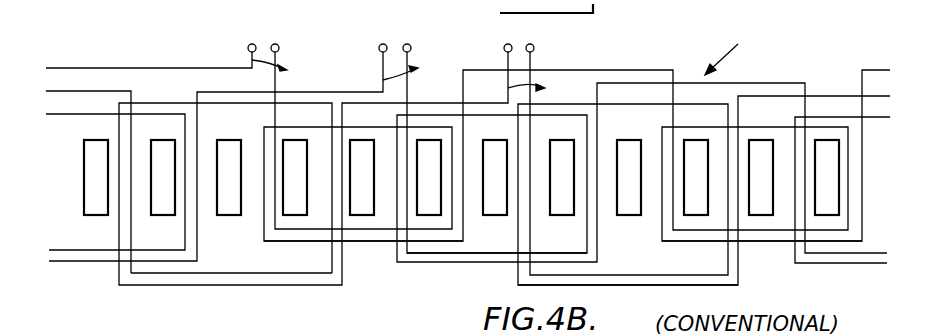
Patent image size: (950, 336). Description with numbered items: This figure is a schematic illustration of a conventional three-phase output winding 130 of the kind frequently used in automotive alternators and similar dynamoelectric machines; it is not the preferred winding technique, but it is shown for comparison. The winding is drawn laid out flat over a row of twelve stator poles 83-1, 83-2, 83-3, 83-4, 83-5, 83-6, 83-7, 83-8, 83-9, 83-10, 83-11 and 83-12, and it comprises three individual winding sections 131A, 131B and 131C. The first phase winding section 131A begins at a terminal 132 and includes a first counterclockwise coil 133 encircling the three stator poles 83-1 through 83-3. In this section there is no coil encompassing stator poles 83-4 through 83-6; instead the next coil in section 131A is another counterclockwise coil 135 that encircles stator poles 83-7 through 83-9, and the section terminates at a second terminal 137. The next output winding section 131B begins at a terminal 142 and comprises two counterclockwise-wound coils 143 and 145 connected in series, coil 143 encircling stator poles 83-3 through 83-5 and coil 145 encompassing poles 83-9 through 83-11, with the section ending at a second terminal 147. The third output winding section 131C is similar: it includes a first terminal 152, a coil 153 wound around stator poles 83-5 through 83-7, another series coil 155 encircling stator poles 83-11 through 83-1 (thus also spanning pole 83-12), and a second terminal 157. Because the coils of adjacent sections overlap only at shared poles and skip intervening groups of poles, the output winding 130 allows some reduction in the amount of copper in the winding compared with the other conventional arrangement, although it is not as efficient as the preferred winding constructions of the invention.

The output winding 130 is at (741, 56).
The first phase winding section 131A is at (294, 71).
The second output winding section 131B is at (425, 71).
The third output winding section 131C is at (550, 89).
The terminal 132 is at (275, 44).
The first counterclockwise coil 133 is at (378, 242).
The counterclockwise coil 135 is at (763, 244).
The second terminal 137 is at (249, 46).
The terminal 142 is at (407, 44).
The counterclockwise-wound coil 143 is at (497, 254).
The counterclockwise-wound coil 145 is at (100, 253).
The second terminal 147 is at (382, 43).
The first terminal 152 is at (530, 44).
The coil 153 is at (694, 284).
The series coil 155 is at (280, 275).
The second terminal 157 is at (508, 43).
The stator pole 83-1 is at (295, 177).
The stator pole 83-2 is at (362, 177).
The stator pole 83-3 is at (429, 177).
The stator pole 83-4 is at (495, 177).
The stator pole 83-5 is at (562, 177).
The stator pole 83-6 is at (629, 177).
The stator pole 83-7 is at (696, 177).
The stator pole 83-8 is at (761, 177).
The stator pole 83-9 is at (827, 177).
The stator pole 83-10 is at (96, 177).
The stator pole 83-11 is at (163, 177).
The stator pole 83-12 is at (229, 177).